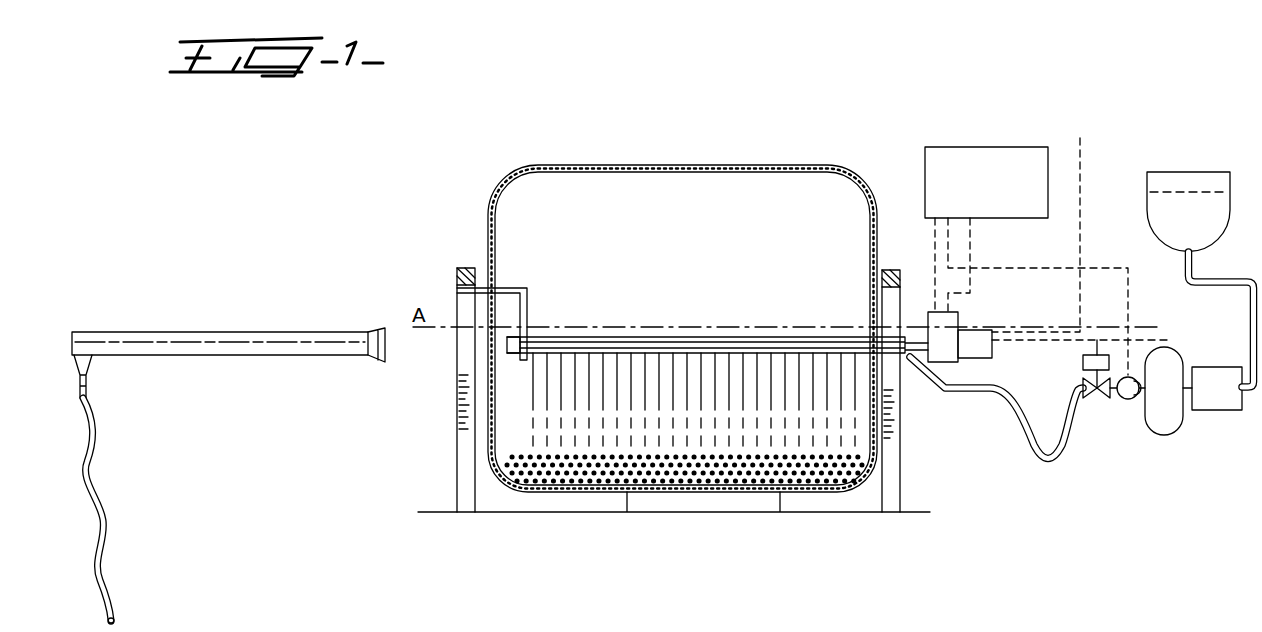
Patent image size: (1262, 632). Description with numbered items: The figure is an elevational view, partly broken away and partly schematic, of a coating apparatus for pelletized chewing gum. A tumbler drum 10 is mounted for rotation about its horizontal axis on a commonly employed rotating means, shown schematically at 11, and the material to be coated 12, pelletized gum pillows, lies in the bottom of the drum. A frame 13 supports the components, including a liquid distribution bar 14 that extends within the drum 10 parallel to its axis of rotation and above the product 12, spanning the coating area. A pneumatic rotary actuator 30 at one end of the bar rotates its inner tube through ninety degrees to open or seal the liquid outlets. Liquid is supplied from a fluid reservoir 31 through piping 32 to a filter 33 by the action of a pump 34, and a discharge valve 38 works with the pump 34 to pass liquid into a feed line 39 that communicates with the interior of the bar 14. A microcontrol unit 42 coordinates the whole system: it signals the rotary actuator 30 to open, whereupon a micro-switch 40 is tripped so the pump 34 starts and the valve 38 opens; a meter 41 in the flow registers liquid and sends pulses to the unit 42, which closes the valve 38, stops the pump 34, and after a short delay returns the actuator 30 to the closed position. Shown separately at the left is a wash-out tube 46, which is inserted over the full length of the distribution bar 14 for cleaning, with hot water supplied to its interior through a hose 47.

The tumbler drum 10 is at (750, 165).
The means for rotating the drum 11 is at (638, 512).
The material to be coated 12 is at (800, 495).
The frame 13 is at (457, 268).
The liquid distribution bar 14 is at (688, 318).
The pneumatic rotary actuator 30 is at (955, 378).
The fluid reservoir 31 is at (1230, 204).
The piping 32 is at (1250, 308).
The filter 33 is at (1228, 411).
The pump 34 is at (1169, 436).
The discharge valve 38 is at (1096, 396).
The feed line 39 is at (1050, 464).
The micro-switch 40 is at (975, 332).
The meter 41 is at (1128, 400).
The microcontrol unit 42 is at (1004, 147).
The wash-out tube 46 is at (265, 332).
The hose 47 is at (102, 485).